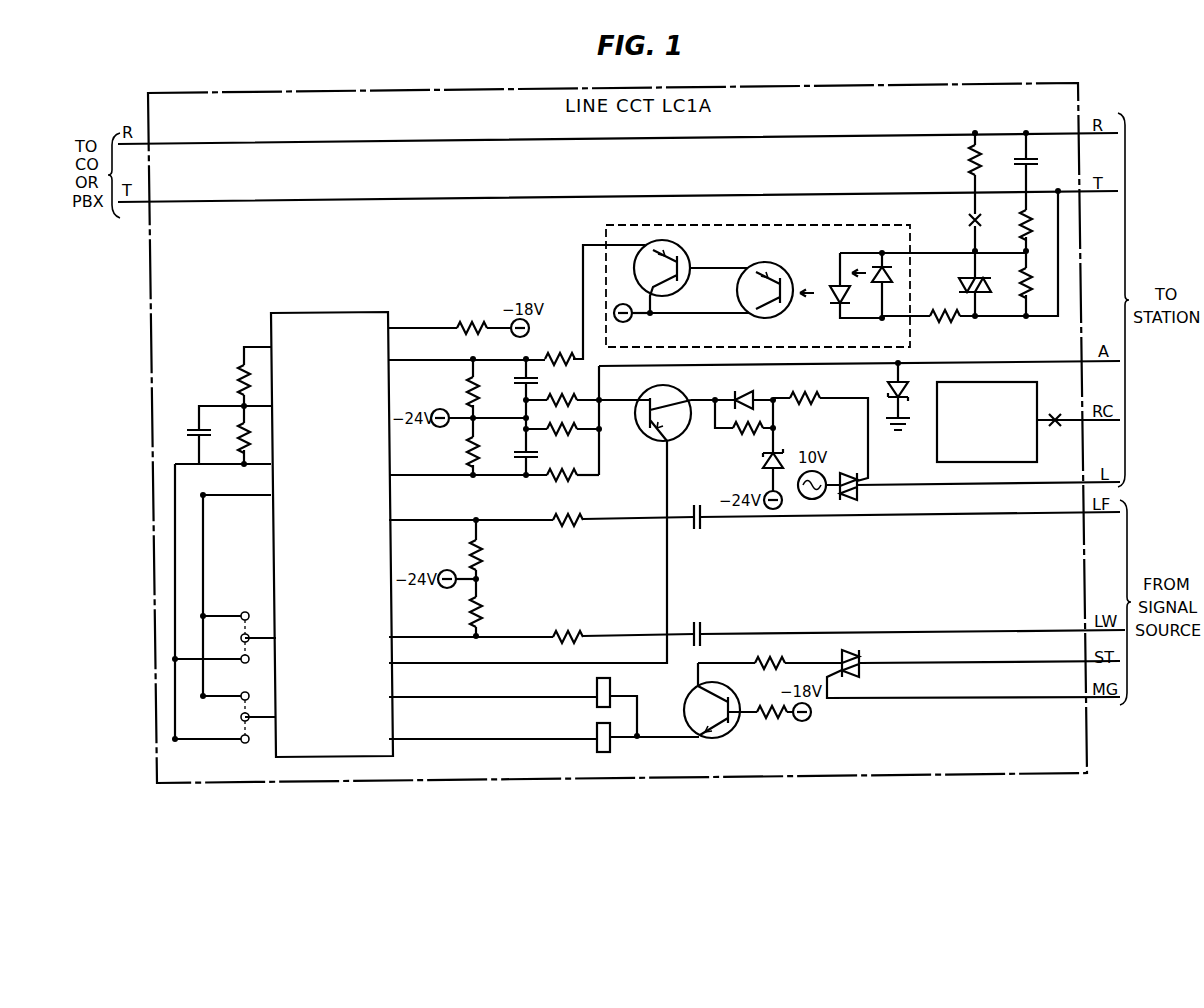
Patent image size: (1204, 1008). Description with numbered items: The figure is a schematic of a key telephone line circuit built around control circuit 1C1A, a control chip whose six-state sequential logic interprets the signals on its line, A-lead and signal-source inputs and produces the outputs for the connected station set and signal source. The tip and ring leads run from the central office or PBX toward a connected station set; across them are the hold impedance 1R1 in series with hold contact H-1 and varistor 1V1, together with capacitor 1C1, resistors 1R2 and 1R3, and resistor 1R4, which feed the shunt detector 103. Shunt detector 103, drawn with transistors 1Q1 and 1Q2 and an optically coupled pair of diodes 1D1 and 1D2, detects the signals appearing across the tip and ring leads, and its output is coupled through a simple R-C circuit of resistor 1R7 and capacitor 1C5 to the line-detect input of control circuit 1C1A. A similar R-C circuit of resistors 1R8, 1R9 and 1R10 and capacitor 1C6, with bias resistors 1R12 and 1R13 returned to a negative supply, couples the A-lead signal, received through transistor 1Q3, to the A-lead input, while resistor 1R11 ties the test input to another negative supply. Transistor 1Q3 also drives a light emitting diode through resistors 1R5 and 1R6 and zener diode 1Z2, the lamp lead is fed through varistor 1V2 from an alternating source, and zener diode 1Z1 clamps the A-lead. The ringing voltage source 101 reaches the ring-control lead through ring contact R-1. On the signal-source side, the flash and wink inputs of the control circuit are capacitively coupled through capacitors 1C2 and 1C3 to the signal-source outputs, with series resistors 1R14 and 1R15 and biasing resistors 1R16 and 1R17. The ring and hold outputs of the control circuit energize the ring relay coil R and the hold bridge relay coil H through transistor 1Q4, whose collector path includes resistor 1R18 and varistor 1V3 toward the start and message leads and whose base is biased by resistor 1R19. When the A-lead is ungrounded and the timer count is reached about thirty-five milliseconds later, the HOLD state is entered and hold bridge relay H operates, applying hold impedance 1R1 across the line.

The control circuit 1C1A is at (338, 312).
The hold impedance 1R1 is at (968, 162).
The capacitor 1C1 is at (1038, 170).
The hold relay contact H-1 is at (965, 220).
The resistor 1R2 is at (1010, 226).
The resistor 1R3 is at (1010, 284).
The varistor 1V1 is at (956, 284).
The resistor 1R4 is at (948, 324).
The transistor 1Q1 is at (674, 252).
The transistor 1Q2 is at (764, 261).
The diode 1D1 is at (879, 284).
The diode 1D2 is at (832, 282).
The shunt detector 103 is at (752, 384).
The resistor 1R7 is at (552, 356).
The resistor 1R8 is at (586, 388).
The resistor 1R9 is at (548, 440).
The resistor 1R10 is at (562, 484).
The resistor 1R11 is at (469, 326).
The resistor 1R12 is at (462, 389).
The resistor 1R13 is at (462, 450).
The capacitor 1C5 is at (509, 386).
The capacitor 1C6 is at (512, 453).
The transistor 1Q3 is at (644, 429).
The resistor 1R5 is at (803, 408).
The resistor 1R6 is at (744, 440).
The zener diode 1Z1 is at (888, 384).
The zener diode 1Z2 is at (764, 470).
The varistor 1V2 is at (854, 500).
The ringing voltage source 101 is at (937, 452).
The ring relay contact R-1 is at (1056, 412).
The resistor 1R14 is at (567, 528).
The capacitor 1C2 is at (697, 532).
The resistor 1R15 is at (573, 624).
The capacitor 1C3 is at (701, 618).
The resistor 1R16 is at (487, 554).
The resistor 1R17 is at (487, 607).
The ring relay coil R is at (591, 689).
The hold bridge relay H is at (591, 733).
The transistor 1Q4 is at (714, 741).
The resistor 1R18 is at (765, 660).
The resistor 1R19 is at (779, 725).
The varistor 1V3 is at (861, 662).